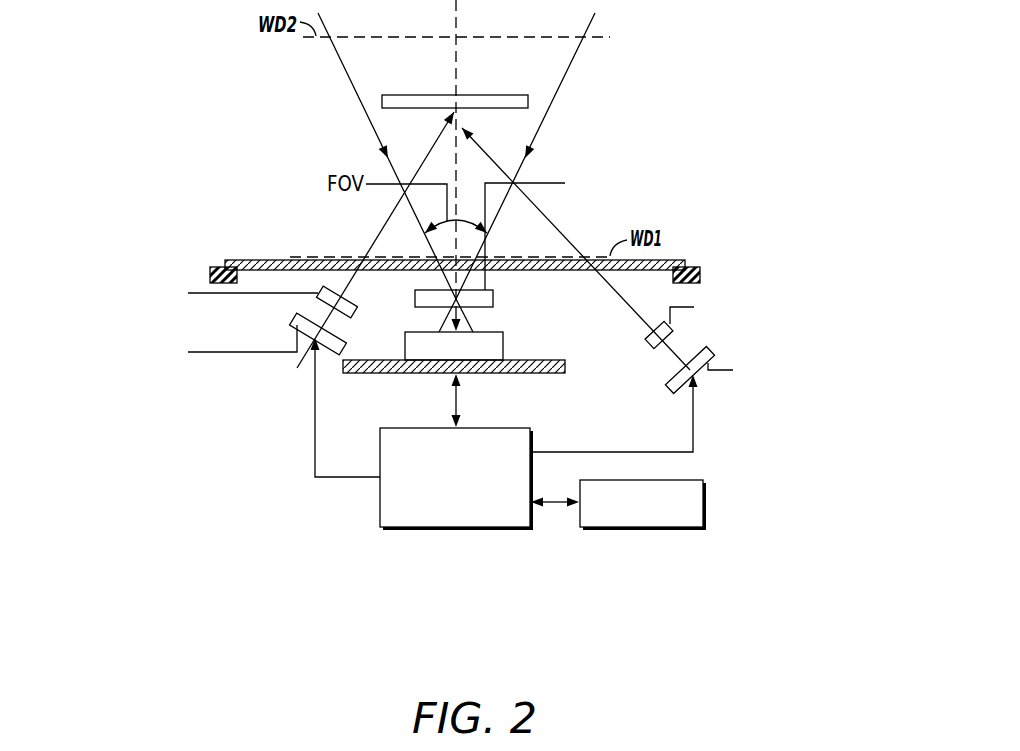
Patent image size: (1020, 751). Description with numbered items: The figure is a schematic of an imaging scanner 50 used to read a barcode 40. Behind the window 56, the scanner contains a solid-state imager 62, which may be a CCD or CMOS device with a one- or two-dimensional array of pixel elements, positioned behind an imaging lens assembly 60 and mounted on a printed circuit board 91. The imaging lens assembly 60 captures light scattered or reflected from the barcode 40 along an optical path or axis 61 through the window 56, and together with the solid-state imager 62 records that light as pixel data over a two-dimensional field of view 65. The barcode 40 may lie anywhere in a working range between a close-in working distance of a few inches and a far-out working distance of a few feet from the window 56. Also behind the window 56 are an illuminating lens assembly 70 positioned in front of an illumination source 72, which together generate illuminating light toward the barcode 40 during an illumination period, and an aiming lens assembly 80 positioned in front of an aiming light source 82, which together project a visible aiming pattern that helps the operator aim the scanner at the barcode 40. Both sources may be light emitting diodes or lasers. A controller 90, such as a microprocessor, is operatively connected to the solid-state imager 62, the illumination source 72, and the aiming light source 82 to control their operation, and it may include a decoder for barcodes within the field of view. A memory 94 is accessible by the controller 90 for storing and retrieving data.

The barcode 40 is at (493, 93).
The imaging scanner 50 is at (580, 148).
The window 56 is at (237, 260).
The imaging lens assembly 60 is at (415, 298).
The optical path or axis 61 is at (458, 13).
The solid-state imager 62 is at (405, 345).
The field of view 65 is at (417, 222).
The illuminating lens assembly 70 is at (778, 288).
The illumination source 72 is at (802, 408).
The aiming lens assembly 80 is at (122, 275).
The aiming light source 82 is at (122, 389).
The controller 90 is at (380, 452).
The printed circuit board 91 is at (507, 376).
The memory 94 is at (643, 530).